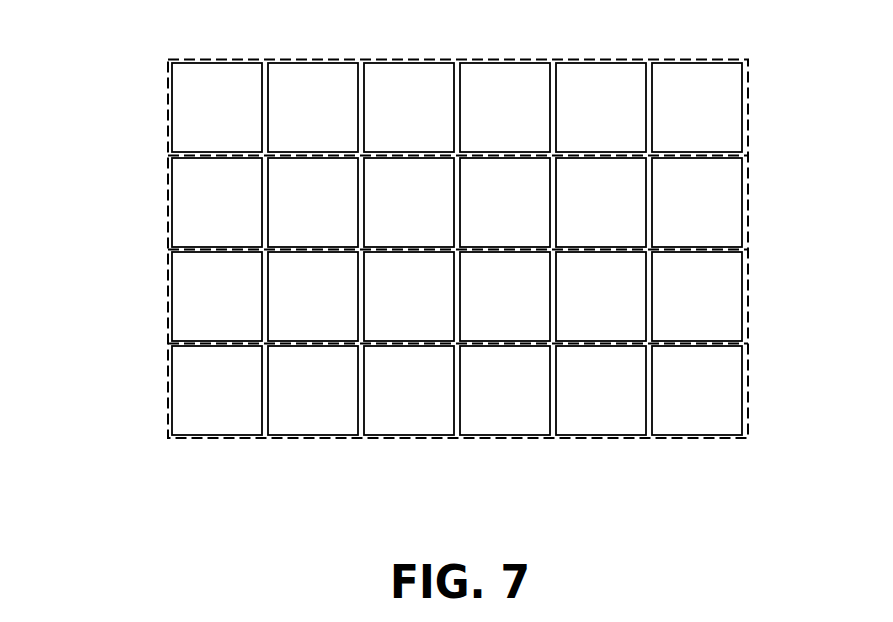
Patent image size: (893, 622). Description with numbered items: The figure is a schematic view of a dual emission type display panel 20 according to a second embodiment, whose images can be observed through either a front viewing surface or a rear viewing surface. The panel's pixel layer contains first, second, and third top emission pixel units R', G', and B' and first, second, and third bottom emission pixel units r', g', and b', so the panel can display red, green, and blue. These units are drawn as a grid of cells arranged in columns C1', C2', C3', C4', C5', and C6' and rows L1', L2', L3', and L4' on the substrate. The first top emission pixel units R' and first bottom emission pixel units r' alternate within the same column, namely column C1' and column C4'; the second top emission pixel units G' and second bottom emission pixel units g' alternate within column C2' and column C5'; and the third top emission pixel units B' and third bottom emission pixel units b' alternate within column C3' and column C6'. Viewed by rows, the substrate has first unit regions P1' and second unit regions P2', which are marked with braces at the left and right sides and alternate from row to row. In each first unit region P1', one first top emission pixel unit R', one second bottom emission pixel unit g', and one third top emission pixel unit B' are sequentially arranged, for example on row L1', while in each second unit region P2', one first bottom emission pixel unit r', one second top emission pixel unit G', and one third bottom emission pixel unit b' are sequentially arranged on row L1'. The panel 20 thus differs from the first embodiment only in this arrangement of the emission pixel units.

The dual emission type display panel 20 is at (429, 274).
The column C1' is at (216, 224).
The column C2' is at (312, 224).
The column C3' is at (408, 224).
The column C4' is at (504, 224).
The column C5' is at (600, 224).
The column C6' is at (696, 224).
The row L1' is at (395, 107).
The row L2' is at (395, 202).
The row L3' is at (395, 296).
The row L4' is at (395, 390).
The first unit region P1' is at (455, 225).
The second unit region P2' is at (455, 228).